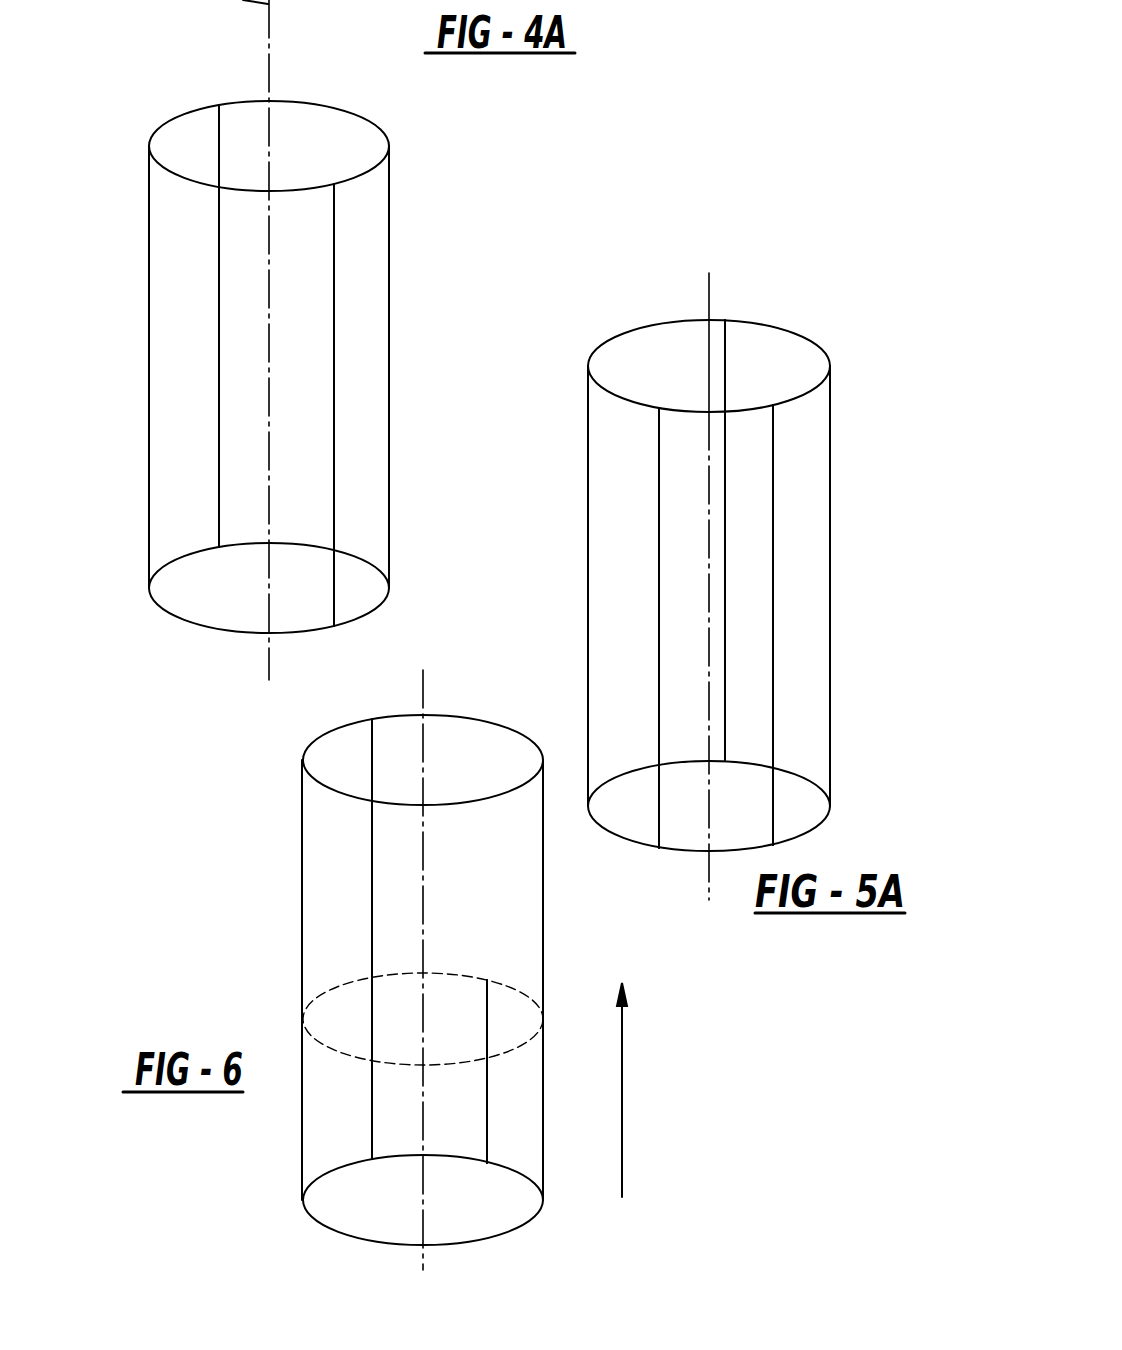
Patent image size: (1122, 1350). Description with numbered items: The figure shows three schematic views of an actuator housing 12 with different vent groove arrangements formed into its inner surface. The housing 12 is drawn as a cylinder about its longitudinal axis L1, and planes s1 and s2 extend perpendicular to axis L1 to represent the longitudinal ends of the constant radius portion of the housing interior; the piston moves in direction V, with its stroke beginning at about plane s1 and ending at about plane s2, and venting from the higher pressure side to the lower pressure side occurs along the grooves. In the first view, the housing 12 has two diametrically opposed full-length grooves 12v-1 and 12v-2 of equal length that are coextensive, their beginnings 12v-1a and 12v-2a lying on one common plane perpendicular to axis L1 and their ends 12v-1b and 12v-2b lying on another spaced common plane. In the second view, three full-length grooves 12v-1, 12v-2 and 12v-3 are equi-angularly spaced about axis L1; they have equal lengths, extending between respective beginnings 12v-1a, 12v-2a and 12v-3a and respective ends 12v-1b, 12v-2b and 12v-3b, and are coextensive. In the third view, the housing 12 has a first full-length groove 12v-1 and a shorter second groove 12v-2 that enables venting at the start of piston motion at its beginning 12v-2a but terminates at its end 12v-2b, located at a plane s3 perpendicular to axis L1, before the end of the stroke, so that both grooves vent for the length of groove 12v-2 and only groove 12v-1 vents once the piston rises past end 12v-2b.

In FIG. 4A, the housing 12 is at (150, 252).
In FIG. 5A, the housing 12 is at (588, 518).
In FIG. 4A, the first vent groove 12v-1 is at (220, 333).
In FIG. 5A, the first vent groove 12v-1 is at (725, 353).
In FIG. 6, the first vent groove 12v-1 is at (372, 865).
In FIG. 4A, the beginning of first vent groove 12v-1a is at (218, 543).
In FIG. 5A, the beginning of first vent groove 12v-1a is at (727, 762).
In FIG. 6, the beginning of first vent groove 12v-1a is at (373, 1157).
In FIG. 4A, the end of first vent groove 12v-1b is at (218, 104).
In FIG. 5A, the end of first vent groove 12v-1b is at (727, 318).
In FIG. 6, the end of first vent groove 12v-1b is at (372, 720).
In FIG. 4A, the second vent groove 12v-2 is at (334, 420).
In FIG. 5A, the second vent groove 12v-2 is at (660, 588).
In FIG. 6, the second vent groove 12v-2 is at (487, 1100).
In FIG. 4A, the beginning of second vent groove 12v-2a is at (335, 623).
In FIG. 5A, the beginning of second vent groove 12v-2a is at (660, 850).
In FIG. 6, the beginning of second vent groove 12v-2a is at (487, 1163).
In FIG. 4A, the end of second vent groove 12v-2b is at (337, 186).
In FIG. 5A, the end of second vent groove 12v-2b is at (657, 407).
In FIG. 6, the end of second vent groove 12v-2b is at (487, 980).
In FIG. 5A, the third vent groove 12v-3 is at (773, 582).
In FIG. 5A, the beginning of third vent groove 12v-3a is at (775, 845).
In FIG. 5A, the end of third vent groove 12v-3b is at (773, 405).
In FIG. 4A, the first plane s1 is at (215, 598).
In FIG. 5A, the first plane s1 is at (637, 815).
In FIG. 6, the first plane s1 is at (385, 1210).
In FIG. 4A, the second plane s2 is at (324, 128).
In FIG. 5A, the second plane s2 is at (790, 367).
In FIG. 6, the second plane s2 is at (342, 755).
In FIG. 6, the third plane s3 is at (330, 1017).
In FIG. 5A, the housing longitudinal axis L1 is at (708, 302).
In FIG. 6, the housing longitudinal axis L1 is at (423, 683).
In FIG. 6, the piston direction V is at (633, 1090).